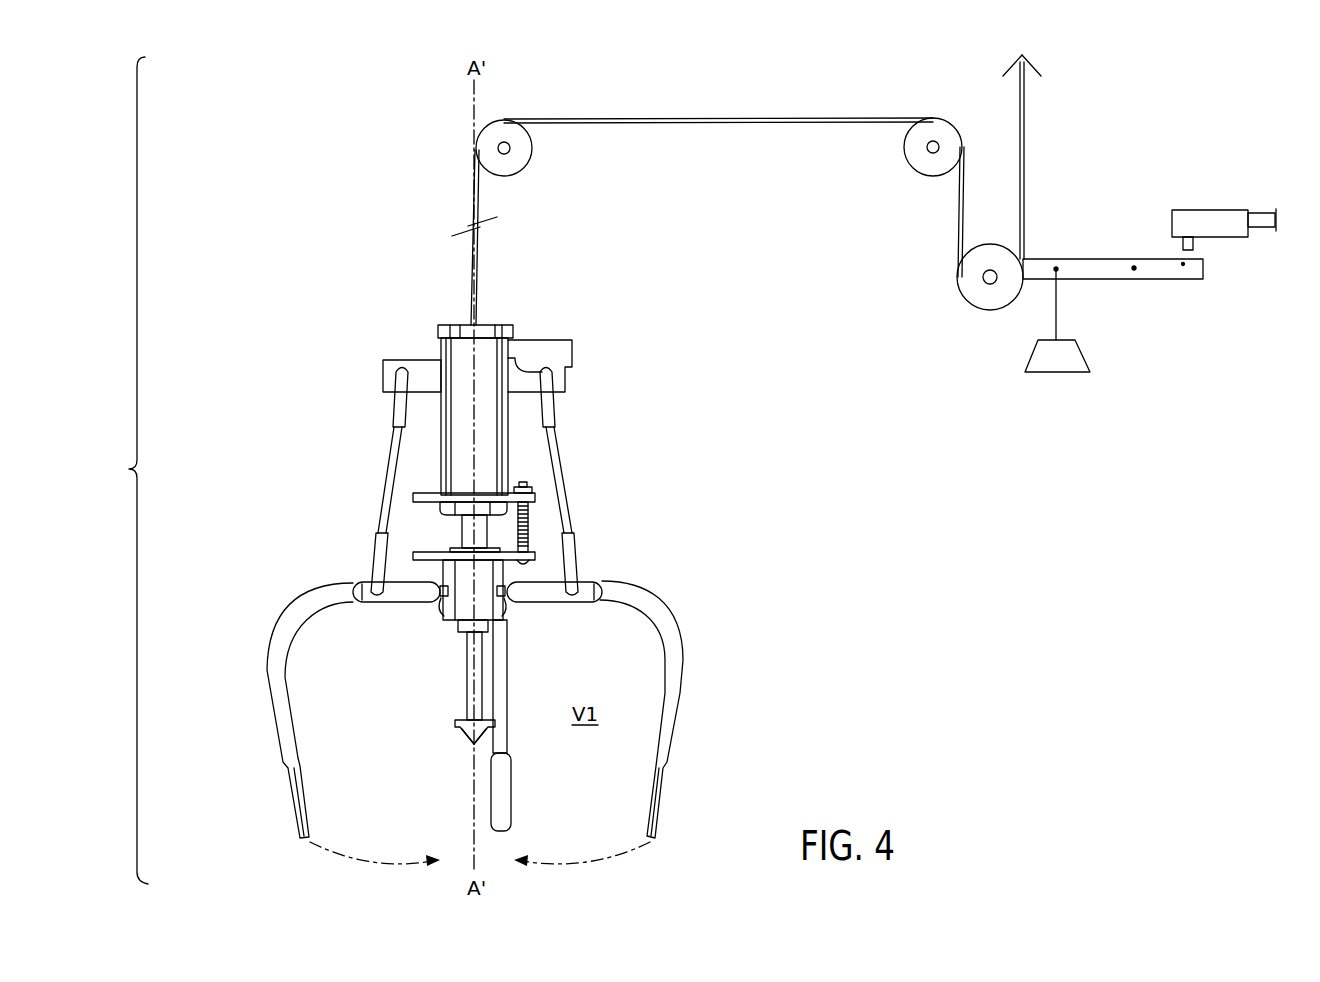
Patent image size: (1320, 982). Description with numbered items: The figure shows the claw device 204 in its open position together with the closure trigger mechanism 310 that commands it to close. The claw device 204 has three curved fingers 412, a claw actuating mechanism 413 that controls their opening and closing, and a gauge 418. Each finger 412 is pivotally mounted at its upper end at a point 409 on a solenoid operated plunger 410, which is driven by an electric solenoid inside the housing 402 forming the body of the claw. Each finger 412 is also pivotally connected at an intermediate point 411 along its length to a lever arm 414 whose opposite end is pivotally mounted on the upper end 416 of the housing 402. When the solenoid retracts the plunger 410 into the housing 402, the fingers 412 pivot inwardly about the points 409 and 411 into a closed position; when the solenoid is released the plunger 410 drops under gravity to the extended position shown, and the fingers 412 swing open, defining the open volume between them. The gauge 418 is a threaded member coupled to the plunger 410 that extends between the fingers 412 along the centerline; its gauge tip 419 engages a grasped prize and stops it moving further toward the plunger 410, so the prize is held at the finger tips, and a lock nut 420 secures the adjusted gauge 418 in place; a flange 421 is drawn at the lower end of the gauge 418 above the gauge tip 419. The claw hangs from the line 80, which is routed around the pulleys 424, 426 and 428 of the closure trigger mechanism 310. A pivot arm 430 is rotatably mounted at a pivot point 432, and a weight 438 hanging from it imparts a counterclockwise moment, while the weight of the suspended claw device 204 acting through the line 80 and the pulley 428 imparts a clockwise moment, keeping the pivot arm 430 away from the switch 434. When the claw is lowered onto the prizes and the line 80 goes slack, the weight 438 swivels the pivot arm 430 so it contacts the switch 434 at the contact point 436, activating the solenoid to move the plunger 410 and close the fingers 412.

The line 80 is at (640, 119).
The claw device 204 is at (256, 536).
The closure trigger mechanism 310 is at (1097, 400).
The housing 402 is at (461, 326).
The point 409 is at (443, 606).
The solenoid operated plunger 410 is at (467, 608).
The intermediate point 411 is at (367, 590).
The fingers 412 is at (280, 628).
The claw actuating mechanism 413 is at (660, 449).
The lever arm 414 is at (556, 428).
The upper end 416 is at (436, 345).
The gauge 418 is at (466, 685).
The gauge tip 419 is at (468, 740).
The lock nut 420 is at (467, 625).
The flange 421 is at (455, 722).
The pulley 424 is at (496, 125).
The pulley 426 is at (921, 163).
The pulley 428 is at (976, 297).
The pivot arm 430 is at (1088, 265).
The pivot point 432 is at (1134, 268).
The switch 434 is at (1235, 233).
The contact point 436 is at (1200, 246).
The weight 438 is at (1053, 362).